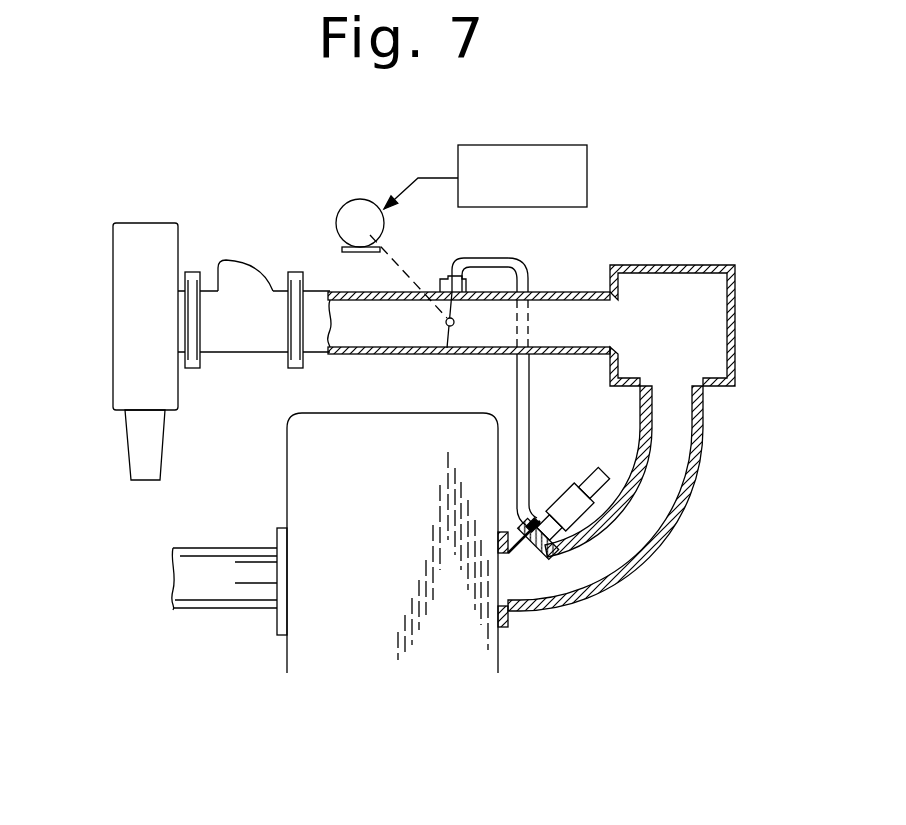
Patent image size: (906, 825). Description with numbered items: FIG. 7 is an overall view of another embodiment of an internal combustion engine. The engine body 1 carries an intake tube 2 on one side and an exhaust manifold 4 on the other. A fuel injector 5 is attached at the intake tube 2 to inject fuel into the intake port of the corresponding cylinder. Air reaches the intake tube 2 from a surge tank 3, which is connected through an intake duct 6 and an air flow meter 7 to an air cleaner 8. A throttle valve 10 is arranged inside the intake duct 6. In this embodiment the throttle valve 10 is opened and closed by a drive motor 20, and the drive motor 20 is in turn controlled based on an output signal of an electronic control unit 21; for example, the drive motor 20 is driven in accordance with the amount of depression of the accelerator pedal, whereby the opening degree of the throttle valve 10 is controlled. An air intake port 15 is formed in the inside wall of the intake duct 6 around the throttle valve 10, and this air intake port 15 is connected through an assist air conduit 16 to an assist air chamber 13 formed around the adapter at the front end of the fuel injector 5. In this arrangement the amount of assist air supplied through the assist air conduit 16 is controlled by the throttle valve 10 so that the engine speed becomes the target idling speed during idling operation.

The engine body 1 is at (340, 629).
The intake tube 2 is at (592, 607).
The surge tank 3 is at (737, 313).
The exhaust manifold 4 is at (213, 598).
The fuel injector 5 is at (561, 500).
The intake duct 6 is at (572, 292).
The air flow meter 7 is at (228, 275).
The air cleaner 8 is at (126, 350).
The throttle valve 10 is at (445, 337).
The assist air chamber 13 is at (535, 527).
The air intake port 15 is at (453, 265).
The assist air conduit 16 is at (530, 389).
The drive motor 20 is at (347, 210).
The electronic control unit 21 is at (593, 170).